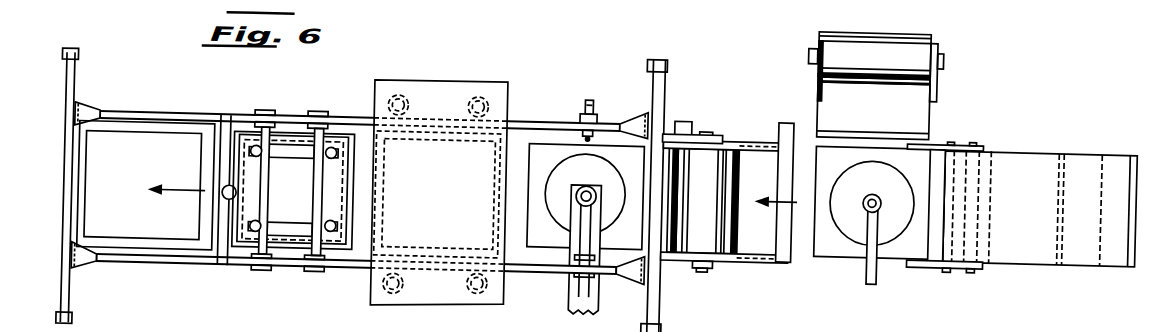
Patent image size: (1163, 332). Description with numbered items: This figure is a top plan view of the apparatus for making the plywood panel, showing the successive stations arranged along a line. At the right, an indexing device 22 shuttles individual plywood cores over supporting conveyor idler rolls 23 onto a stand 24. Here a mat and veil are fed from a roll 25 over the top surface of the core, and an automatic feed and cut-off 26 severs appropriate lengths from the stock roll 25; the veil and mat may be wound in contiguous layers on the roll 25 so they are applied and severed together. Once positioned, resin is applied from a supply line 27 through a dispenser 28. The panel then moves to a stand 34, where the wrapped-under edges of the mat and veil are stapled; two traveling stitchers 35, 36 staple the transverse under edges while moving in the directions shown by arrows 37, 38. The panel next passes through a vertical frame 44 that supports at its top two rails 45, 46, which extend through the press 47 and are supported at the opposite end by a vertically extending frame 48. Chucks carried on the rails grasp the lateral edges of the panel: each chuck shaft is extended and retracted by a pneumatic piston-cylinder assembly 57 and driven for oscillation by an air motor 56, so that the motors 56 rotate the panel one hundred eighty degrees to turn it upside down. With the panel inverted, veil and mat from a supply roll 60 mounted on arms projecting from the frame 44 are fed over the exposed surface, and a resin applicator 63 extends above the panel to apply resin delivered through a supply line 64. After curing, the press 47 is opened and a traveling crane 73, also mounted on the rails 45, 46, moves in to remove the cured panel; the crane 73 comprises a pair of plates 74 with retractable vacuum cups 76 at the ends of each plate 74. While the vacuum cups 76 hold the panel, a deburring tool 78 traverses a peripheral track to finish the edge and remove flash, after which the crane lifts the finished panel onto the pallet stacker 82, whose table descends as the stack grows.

The indexing device 22 is at (1073, 244).
The supporting conveyor idler rolls 23 is at (986, 224).
The stand 24 is at (899, 241).
The roll 25 is at (917, 30).
The automatic feed and cut-off 26 is at (915, 114).
The supply line 27 is at (873, 259).
The dispenser 28 is at (852, 220).
The stand 34 is at (744, 248).
The traveling stitcher 35 is at (691, 113).
The traveling stitcher 36 is at (779, 114).
The arrow 37 is at (684, 97).
The arrow 38 is at (781, 97).
The vertical frame 44 is at (667, 287).
The rail 45 is at (538, 111).
The rail 46 is at (533, 262).
The press 47 is at (438, 72).
The vertically extending frame 48 is at (74, 79).
The air motor 56 is at (597, 101).
The pneumatic piston-cylinder assembly 57 is at (590, 87).
The supply roll 60 is at (729, 212).
The resin applicator 63 is at (571, 154).
The supply line 64 is at (594, 280).
The traveling crane 73 is at (275, 171).
The plate 74 is at (289, 218).
The retractable vacuum cups 76 is at (255, 142).
The deburring tool 78 is at (227, 183).
The pallet stacker 82 is at (159, 250).